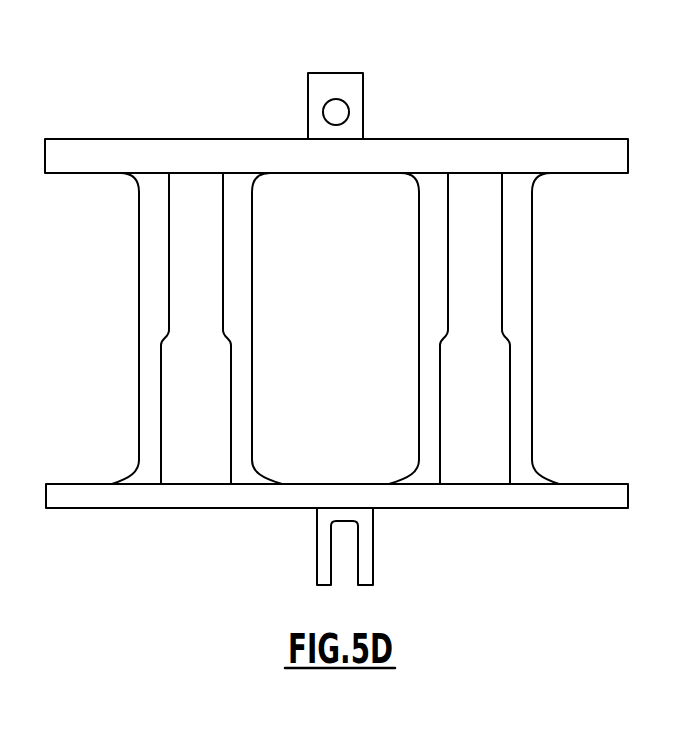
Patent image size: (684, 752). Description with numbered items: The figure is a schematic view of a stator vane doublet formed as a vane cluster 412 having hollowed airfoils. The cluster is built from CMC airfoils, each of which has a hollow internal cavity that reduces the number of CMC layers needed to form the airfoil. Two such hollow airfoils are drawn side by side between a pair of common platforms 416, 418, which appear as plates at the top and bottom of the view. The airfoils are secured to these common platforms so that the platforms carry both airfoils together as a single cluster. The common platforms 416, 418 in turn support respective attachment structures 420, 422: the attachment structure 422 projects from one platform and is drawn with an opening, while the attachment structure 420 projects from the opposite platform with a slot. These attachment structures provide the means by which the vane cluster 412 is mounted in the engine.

The vane cluster 412 is at (505, 88).
The common platform 416 is at (592, 483).
The common platform 418 is at (567, 152).
The attachment structure 420 is at (367, 565).
The attachment structure 422 is at (352, 88).